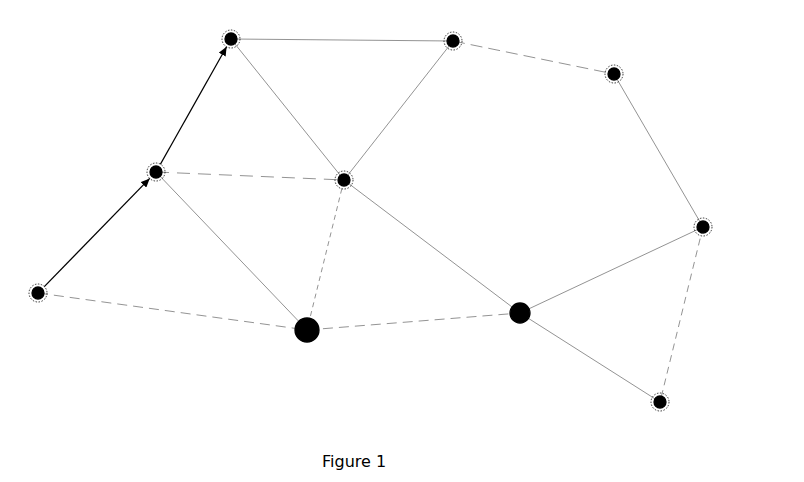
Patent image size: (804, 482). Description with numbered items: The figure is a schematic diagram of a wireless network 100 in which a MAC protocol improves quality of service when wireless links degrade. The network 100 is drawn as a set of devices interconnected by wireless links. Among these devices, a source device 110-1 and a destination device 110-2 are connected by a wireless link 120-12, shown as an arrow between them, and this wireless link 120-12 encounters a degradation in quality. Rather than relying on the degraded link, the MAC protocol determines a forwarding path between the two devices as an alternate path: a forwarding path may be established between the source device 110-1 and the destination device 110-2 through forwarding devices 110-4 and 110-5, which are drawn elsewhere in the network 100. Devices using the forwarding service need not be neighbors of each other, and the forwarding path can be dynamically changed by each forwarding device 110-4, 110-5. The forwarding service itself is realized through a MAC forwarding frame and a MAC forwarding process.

The network 100 is at (500, 43).
The source device 110-1 is at (63, 293).
The destination device 110-2 is at (131, 172).
The forwarding device 110-4 is at (293, 340).
The forwarding device 110-5 is at (322, 186).
The wireless link 120-12 is at (112, 214).